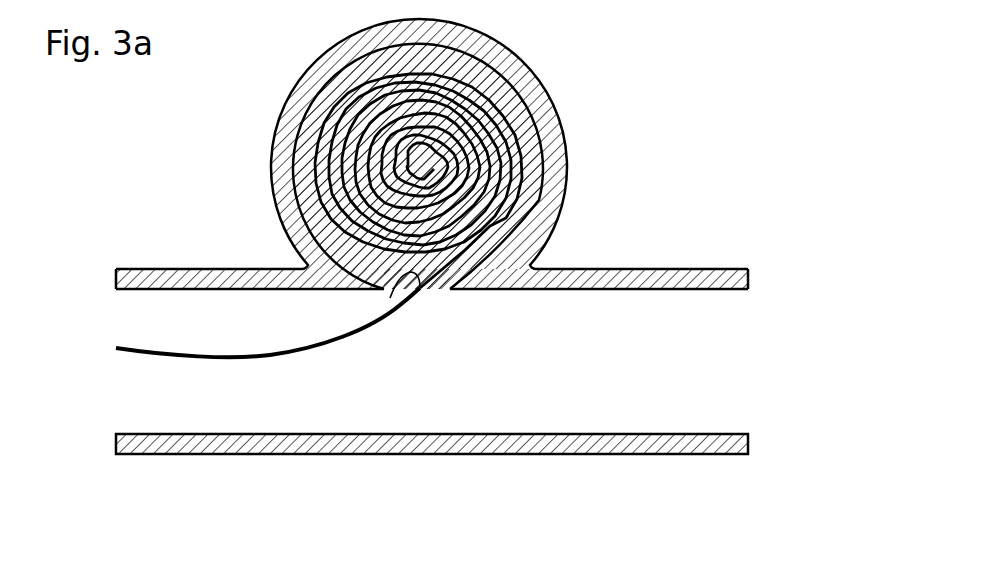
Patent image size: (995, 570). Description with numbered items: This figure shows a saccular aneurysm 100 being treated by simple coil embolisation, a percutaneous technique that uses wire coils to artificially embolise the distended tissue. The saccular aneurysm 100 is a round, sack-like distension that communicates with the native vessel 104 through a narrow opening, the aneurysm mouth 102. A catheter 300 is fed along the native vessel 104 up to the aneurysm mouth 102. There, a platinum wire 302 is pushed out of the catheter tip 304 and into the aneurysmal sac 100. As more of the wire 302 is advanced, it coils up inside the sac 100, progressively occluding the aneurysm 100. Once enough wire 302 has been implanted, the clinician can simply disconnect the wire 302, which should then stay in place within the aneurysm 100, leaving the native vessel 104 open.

The saccular aneurysm 100 is at (290, 107).
The aneurysm mouth 102 is at (423, 328).
The native vessel 104 is at (186, 275).
The catheter 300 is at (283, 358).
The platinum wire 302 is at (520, 170).
The catheter tip 304 is at (388, 293).